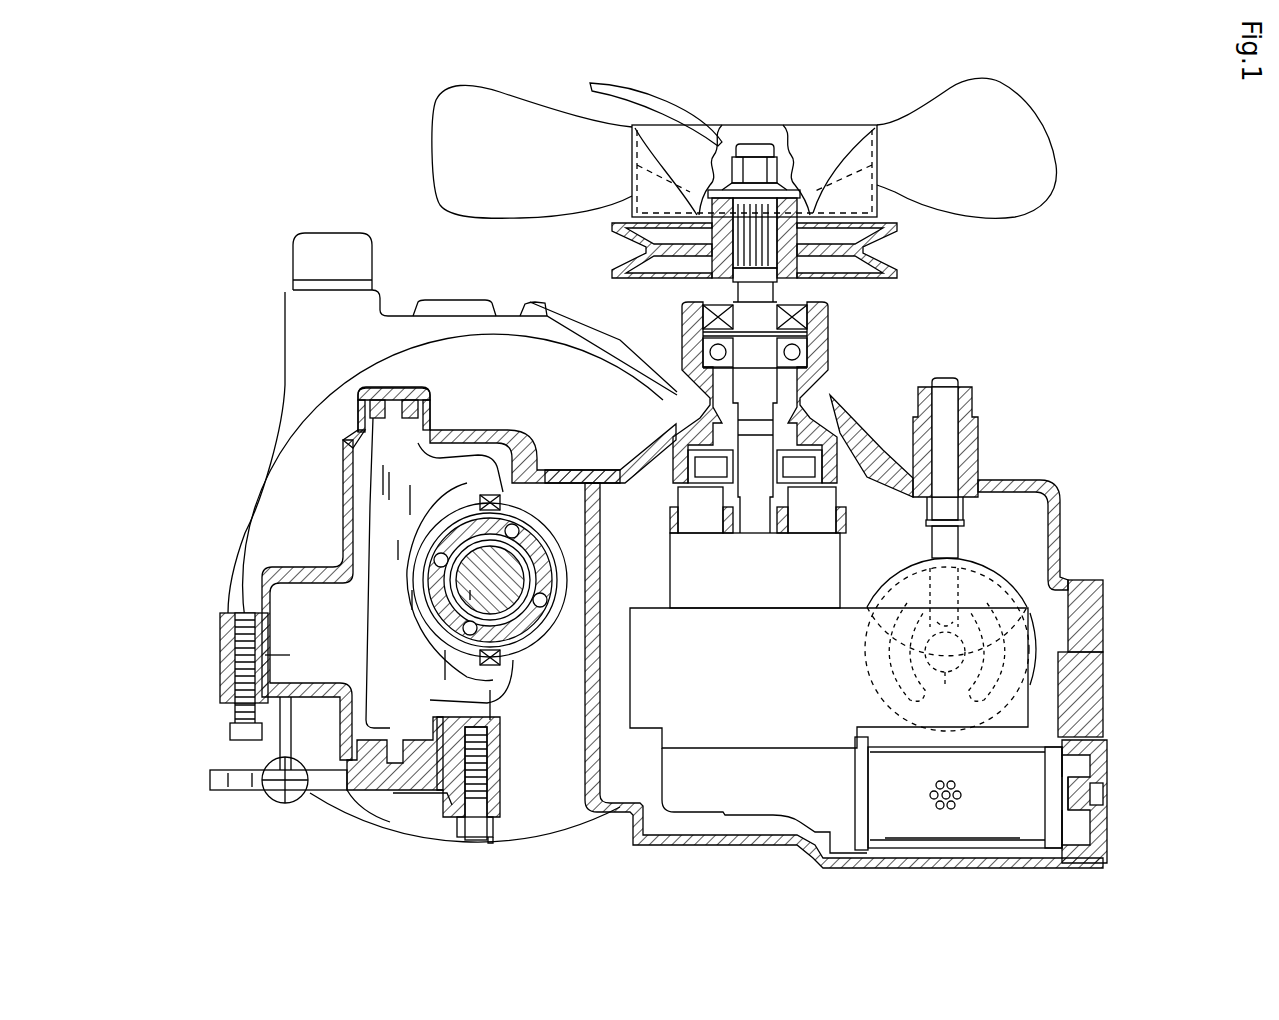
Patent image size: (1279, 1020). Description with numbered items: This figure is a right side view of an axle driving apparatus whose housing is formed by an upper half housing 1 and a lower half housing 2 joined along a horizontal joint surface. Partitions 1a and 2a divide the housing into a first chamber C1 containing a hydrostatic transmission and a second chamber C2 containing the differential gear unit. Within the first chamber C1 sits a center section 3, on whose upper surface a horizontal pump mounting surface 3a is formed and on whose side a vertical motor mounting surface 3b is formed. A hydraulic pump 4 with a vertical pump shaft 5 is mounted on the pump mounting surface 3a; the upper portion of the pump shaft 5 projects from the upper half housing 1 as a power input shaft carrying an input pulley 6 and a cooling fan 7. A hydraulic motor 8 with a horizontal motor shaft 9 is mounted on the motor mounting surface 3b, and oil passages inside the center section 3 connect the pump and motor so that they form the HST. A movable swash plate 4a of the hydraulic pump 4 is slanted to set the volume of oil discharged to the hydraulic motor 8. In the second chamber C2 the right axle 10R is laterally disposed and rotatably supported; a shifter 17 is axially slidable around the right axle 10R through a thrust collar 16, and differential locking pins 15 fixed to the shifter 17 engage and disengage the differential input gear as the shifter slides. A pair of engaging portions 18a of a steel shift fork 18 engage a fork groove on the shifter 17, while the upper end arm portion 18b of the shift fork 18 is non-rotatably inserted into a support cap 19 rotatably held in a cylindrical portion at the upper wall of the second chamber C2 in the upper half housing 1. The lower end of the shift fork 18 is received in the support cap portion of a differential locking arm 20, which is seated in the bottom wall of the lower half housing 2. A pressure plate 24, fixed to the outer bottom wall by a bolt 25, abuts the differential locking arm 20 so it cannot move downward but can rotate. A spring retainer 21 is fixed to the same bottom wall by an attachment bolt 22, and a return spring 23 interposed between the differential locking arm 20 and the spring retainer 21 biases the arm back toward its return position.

The upper half housing 1 is at (1103, 621).
The partition 1a is at (600, 562).
The lower half housing 2 is at (1103, 683).
The partition 2a is at (598, 660).
The center section 3 is at (762, 706).
The pump mounting surface 3a is at (768, 610).
The motor mounting surface 3b is at (855, 672).
The hydraulic pump 4 is at (859, 515).
The movable swash plate 4a is at (863, 470).
The pump shaft 5 is at (750, 522).
The input pulley 6 is at (897, 275).
The cooling fan 7 is at (978, 220).
The hydraulic motor 8 is at (998, 566).
The motor shaft 9 is at (958, 772).
The right axle 10R is at (520, 630).
The differential locking pins 15 is at (458, 625).
The thrust collar 16 is at (460, 545).
The shifter 17 is at (540, 505).
The shift fork 18 is at (370, 590).
The engaging portions 18a is at (393, 402).
The upper end arm portion 18b is at (375, 705).
The support cap 19 is at (430, 408).
The differential locking arm 20 is at (380, 795).
The spring retainer 21 is at (225, 695).
The attachment bolt 22 is at (228, 733).
The return spring 23 is at (292, 758).
The pressure plate 24 is at (392, 825).
The bolt 25 is at (497, 830).
The first chamber C1 is at (623, 537).
The second chamber C2 is at (303, 632).